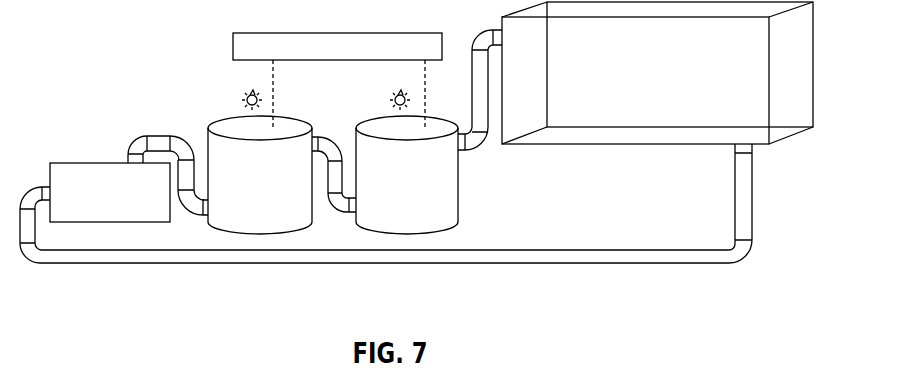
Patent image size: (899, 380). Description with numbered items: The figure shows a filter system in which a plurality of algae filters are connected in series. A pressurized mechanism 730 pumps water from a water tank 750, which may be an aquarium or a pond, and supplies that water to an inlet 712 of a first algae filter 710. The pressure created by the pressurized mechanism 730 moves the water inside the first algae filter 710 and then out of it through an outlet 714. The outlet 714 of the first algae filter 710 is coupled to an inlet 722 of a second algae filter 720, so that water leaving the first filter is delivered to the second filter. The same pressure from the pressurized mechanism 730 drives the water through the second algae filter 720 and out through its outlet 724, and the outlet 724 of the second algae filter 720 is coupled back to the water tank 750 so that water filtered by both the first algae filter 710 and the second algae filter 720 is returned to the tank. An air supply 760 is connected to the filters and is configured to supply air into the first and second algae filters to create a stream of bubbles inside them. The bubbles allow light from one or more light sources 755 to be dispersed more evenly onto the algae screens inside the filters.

The first algae filter 710 is at (260, 175).
The inlet 712 is at (206, 211).
The outlet 714 is at (314, 136).
The second algae filter 720 is at (407, 175).
The inlet 722 is at (353, 215).
The outlet 724 is at (463, 150).
The pressurized mechanism 730 is at (110, 192).
The water tank 750 is at (657, 73).
The light source 755 is at (248, 93).
The air supply 760 is at (337, 80).